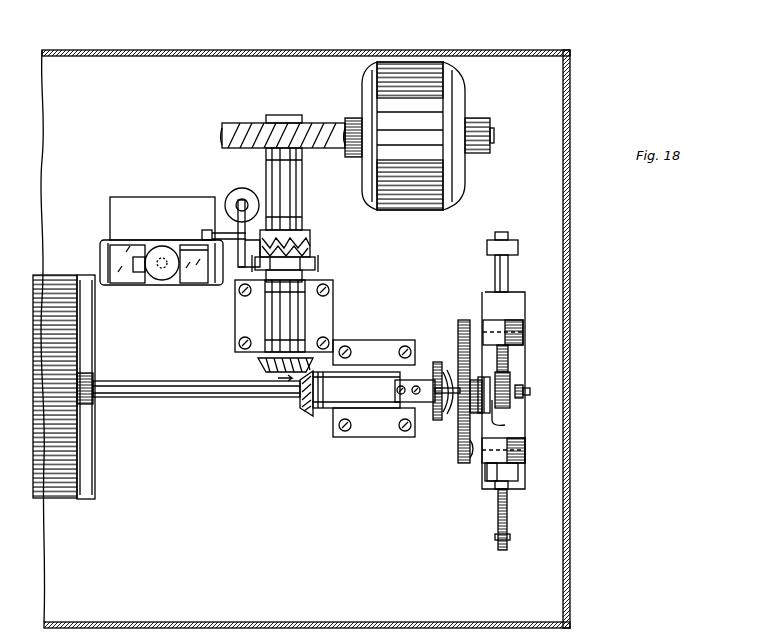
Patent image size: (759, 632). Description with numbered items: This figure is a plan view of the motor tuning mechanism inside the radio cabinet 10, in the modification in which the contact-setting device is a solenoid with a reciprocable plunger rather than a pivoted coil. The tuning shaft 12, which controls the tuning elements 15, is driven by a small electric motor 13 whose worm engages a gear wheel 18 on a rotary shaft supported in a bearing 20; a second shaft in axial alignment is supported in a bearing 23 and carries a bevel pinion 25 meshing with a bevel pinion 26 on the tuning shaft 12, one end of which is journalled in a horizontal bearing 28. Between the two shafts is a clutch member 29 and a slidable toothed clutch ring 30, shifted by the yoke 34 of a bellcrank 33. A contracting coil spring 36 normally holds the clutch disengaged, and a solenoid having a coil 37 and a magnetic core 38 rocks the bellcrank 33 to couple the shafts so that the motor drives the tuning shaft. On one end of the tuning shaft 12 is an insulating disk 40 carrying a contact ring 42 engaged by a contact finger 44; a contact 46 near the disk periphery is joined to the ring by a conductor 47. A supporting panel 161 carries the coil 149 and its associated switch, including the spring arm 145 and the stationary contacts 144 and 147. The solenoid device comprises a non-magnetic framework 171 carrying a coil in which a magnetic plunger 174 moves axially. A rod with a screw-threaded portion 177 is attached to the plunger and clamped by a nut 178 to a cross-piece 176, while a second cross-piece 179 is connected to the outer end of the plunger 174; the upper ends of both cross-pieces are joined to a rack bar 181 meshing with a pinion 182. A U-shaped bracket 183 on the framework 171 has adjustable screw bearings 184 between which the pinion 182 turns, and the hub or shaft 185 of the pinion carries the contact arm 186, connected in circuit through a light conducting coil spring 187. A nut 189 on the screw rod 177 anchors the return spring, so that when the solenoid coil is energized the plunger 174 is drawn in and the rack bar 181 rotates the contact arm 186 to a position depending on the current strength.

The cabinet 10 is at (400, 50).
The tuning shaft 12 is at (143, 380).
The electric motor 13 is at (428, 136).
The tuning elements 15 is at (64, 387).
The gear wheel 18 is at (310, 122).
The bearing 20 is at (302, 190).
The bearing 23 is at (302, 310).
The bevel pinion 25 is at (257, 362).
The bevel pinion 26 is at (307, 410).
The horizontal bearing 28 is at (365, 365).
The clutch member 29 is at (310, 234).
The clutch ring 30 is at (306, 251).
The bellcrank 33 is at (258, 196).
The yoke 34 is at (318, 264).
The coil spring 36 is at (238, 230).
The coil 37 is at (238, 203).
The magnetic core 38 is at (236, 210).
The insulating disk 40 is at (465, 450).
The contact ring 42 is at (440, 415).
The contact finger 44 is at (432, 388).
The contact 46 is at (445, 390).
The conductor 47 is at (448, 410).
The stationary contact 144 is at (124, 284).
The spring arm 145 is at (199, 268).
The stationary contact 147 is at (192, 283).
The coil 149 is at (164, 282).
The supporting panel 161 is at (133, 237).
The framework 171 is at (520, 458).
The magnetic plunger 174 is at (526, 292).
The cross-piece 176 is at (518, 474).
The screw-threaded portion 177 is at (507, 510).
The nut 178 is at (495, 482).
The second cross-piece 179 is at (518, 247).
The rack bar 181 is at (504, 275).
The pinion 182 is at (510, 425).
The U-shaped bracket 183 is at (523, 375).
The screw bearings 184 is at (530, 391).
The hub or shaft 185 is at (480, 365).
The contact arm 186 is at (472, 455).
The coil spring 187 is at (500, 348).
The nut 189 is at (510, 537).